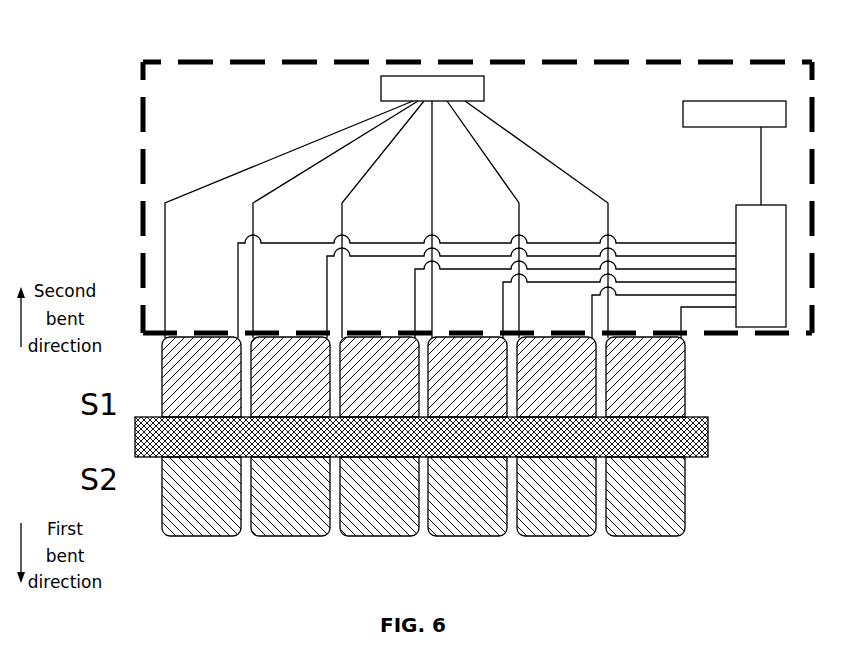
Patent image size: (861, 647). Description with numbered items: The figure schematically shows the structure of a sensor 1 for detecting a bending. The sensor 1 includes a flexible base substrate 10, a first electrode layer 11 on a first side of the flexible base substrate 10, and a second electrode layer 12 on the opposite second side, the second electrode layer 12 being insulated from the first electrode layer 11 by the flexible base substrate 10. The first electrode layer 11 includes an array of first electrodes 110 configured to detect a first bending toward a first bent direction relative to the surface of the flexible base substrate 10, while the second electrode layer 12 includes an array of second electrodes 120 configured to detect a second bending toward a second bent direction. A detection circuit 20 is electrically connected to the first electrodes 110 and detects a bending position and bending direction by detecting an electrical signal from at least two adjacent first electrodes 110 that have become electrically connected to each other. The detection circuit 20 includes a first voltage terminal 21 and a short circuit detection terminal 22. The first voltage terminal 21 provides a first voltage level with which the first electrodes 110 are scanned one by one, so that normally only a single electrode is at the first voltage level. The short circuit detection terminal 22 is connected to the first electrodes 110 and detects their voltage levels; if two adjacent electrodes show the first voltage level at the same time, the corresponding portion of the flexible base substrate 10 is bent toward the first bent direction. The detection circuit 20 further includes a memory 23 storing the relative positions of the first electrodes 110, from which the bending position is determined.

The sensor 1 is at (697, 519).
The flexible base substrate 10 is at (708, 437).
The first electrode layer 11 is at (703, 378).
The second electrode layer 12 is at (703, 498).
The first electrodes 110 is at (423, 377).
The second electrodes 120 is at (423, 496).
The detection circuit 20 is at (542, 62).
The first voltage terminal 21 is at (432, 89).
The short circuit detection terminal 22 is at (761, 266).
The memory 23 is at (734, 153).